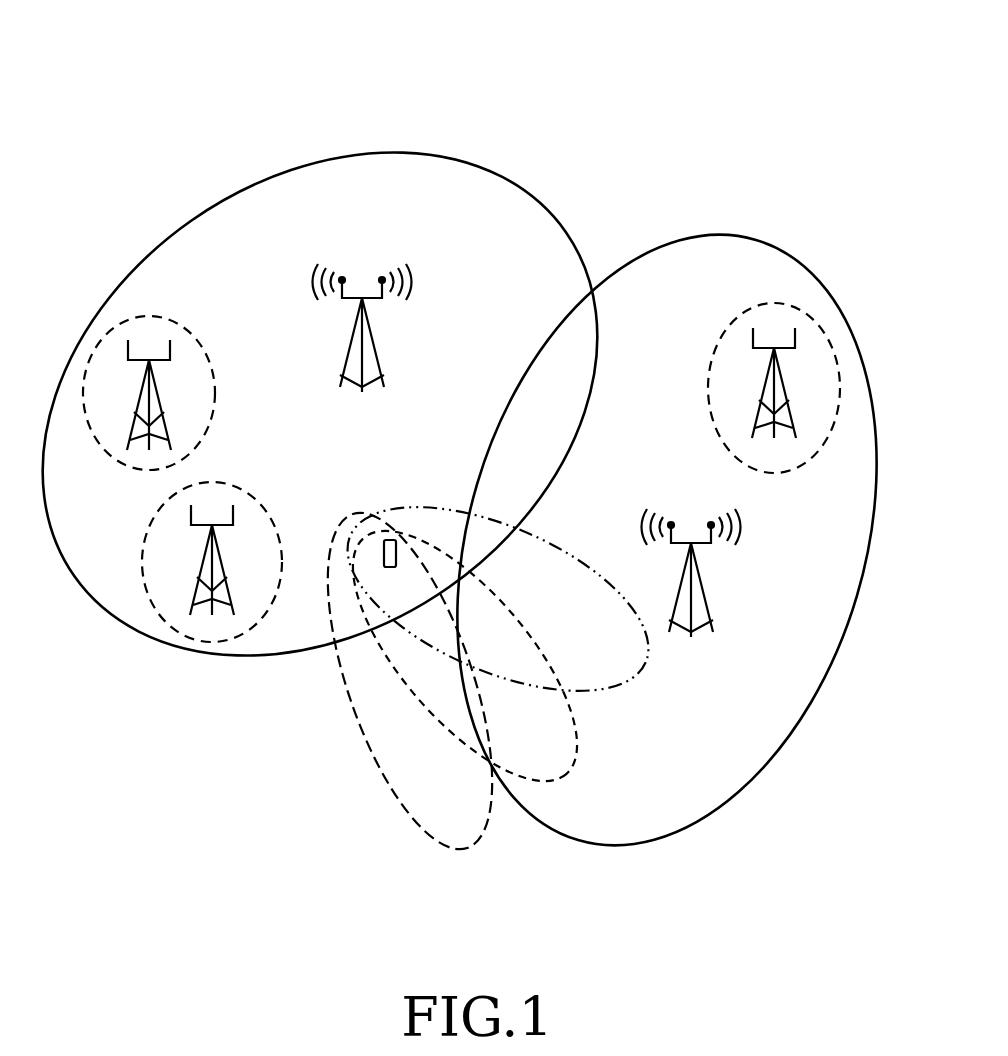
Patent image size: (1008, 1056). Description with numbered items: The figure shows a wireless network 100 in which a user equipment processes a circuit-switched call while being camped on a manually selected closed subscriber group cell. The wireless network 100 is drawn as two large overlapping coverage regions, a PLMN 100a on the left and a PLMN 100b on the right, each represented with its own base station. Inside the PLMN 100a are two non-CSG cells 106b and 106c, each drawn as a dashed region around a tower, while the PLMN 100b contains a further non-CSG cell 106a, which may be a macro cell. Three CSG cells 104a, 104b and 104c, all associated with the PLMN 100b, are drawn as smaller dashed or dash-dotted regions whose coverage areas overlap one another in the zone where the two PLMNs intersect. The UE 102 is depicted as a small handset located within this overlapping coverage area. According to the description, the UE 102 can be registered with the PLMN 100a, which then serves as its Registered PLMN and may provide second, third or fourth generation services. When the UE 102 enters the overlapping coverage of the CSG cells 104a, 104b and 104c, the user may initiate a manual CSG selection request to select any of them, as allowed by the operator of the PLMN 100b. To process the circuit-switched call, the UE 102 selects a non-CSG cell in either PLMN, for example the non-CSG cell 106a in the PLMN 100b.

The wireless network 100 is at (535, 120).
The PLMN 100a is at (348, 263).
The PLMN 100b is at (675, 510).
The UE 102 is at (390, 530).
The CSG cell 104a is at (640, 663).
The CSG cell 104b is at (555, 752).
The CSG cell 104c is at (467, 808).
The non-CSG cell 106a is at (736, 300).
The non-CSG cell 106b is at (216, 311).
The non-CSG cell 106c is at (131, 549).